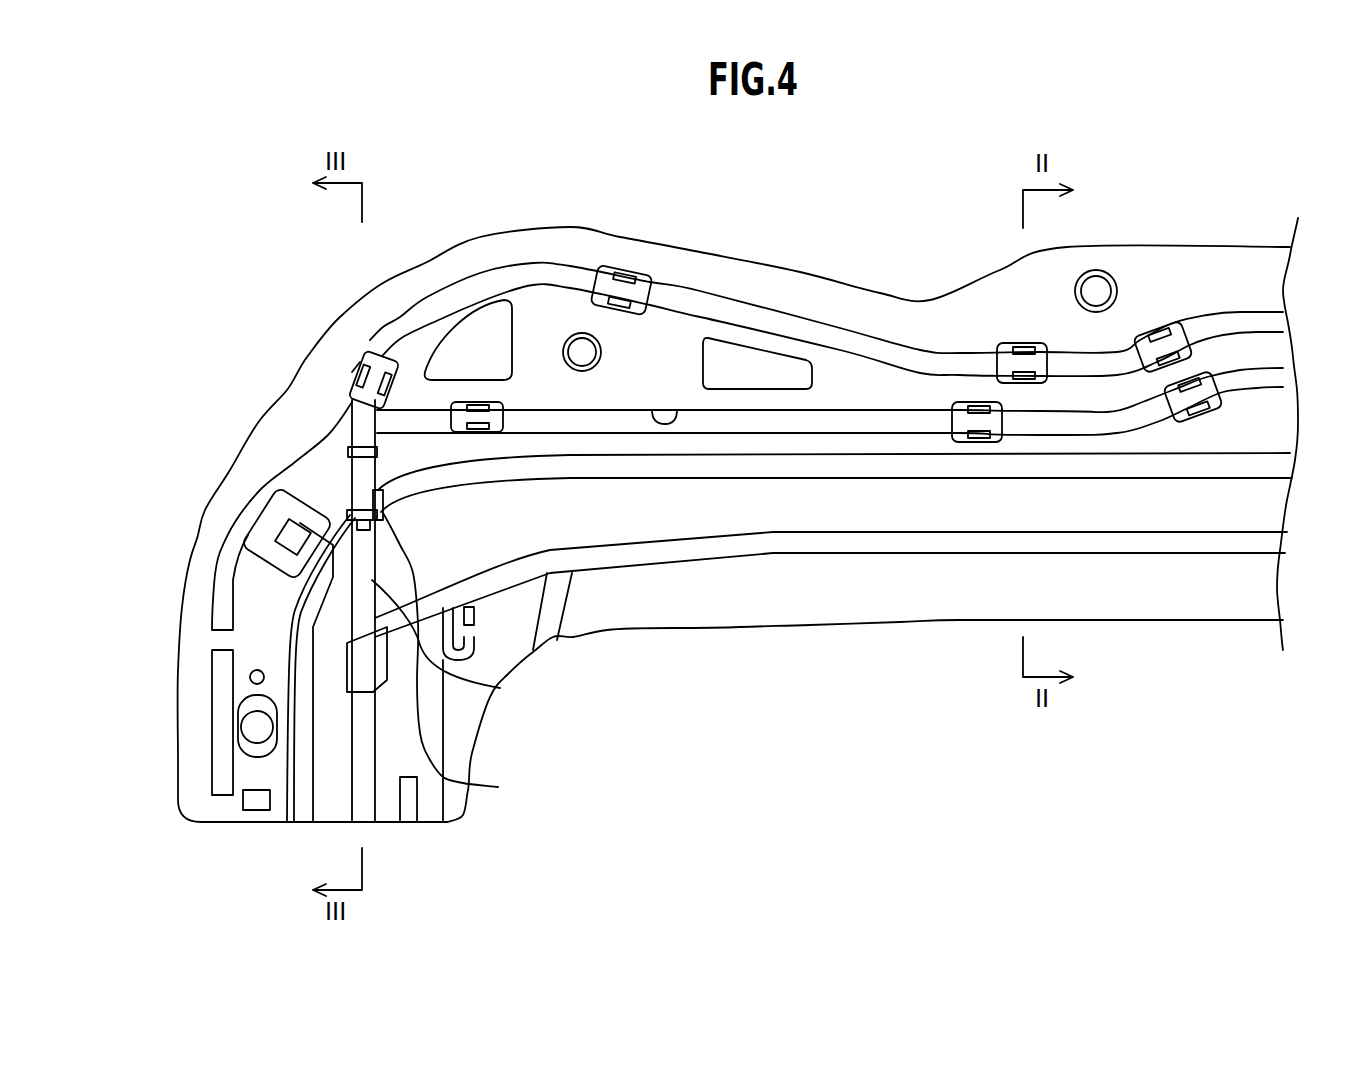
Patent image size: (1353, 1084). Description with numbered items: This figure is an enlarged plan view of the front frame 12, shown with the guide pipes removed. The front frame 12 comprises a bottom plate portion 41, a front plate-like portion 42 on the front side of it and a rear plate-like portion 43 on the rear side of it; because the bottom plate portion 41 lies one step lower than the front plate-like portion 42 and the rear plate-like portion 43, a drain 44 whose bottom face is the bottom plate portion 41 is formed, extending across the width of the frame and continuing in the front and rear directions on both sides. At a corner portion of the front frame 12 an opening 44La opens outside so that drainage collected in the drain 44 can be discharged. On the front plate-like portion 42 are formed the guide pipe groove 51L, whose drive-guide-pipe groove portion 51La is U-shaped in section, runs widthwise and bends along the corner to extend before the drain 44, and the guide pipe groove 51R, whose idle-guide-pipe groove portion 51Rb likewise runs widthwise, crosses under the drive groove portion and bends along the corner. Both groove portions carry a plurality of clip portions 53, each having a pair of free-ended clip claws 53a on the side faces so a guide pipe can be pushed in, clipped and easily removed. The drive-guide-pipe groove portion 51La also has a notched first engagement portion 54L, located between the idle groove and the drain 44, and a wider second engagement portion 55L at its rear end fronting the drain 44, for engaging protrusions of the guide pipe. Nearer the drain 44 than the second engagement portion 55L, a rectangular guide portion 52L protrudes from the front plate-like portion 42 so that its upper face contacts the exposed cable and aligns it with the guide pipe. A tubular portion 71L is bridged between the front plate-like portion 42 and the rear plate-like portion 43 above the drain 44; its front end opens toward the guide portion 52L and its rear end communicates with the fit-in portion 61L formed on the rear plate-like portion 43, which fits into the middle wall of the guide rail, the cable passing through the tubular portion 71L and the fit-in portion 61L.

The front frame 12 is at (1109, 239).
The bottom plate portion 41 is at (1128, 513).
The front plate-like portion 42 is at (820, 295).
The rear plate-like portion 43 is at (852, 600).
The drain 44 is at (742, 518).
The opening 44La is at (273, 522).
The guide pipe groove 51L is at (817, 482).
The drive-guide-pipe groove portion 51La is at (543, 262).
The guide pipe groove 51R is at (830, 304).
The idle-guide-pipe groove portion 51Rb is at (676, 410).
The guide portion 52L is at (500, 688).
The clip portion 53 is at (460, 400).
The clip claw 53a is at (347, 381).
The first engagement portion 54L is at (353, 450).
The second engagement portion 55L is at (350, 507).
The fit-in portion 61L is at (465, 658).
The tubular portion 71L is at (385, 665).